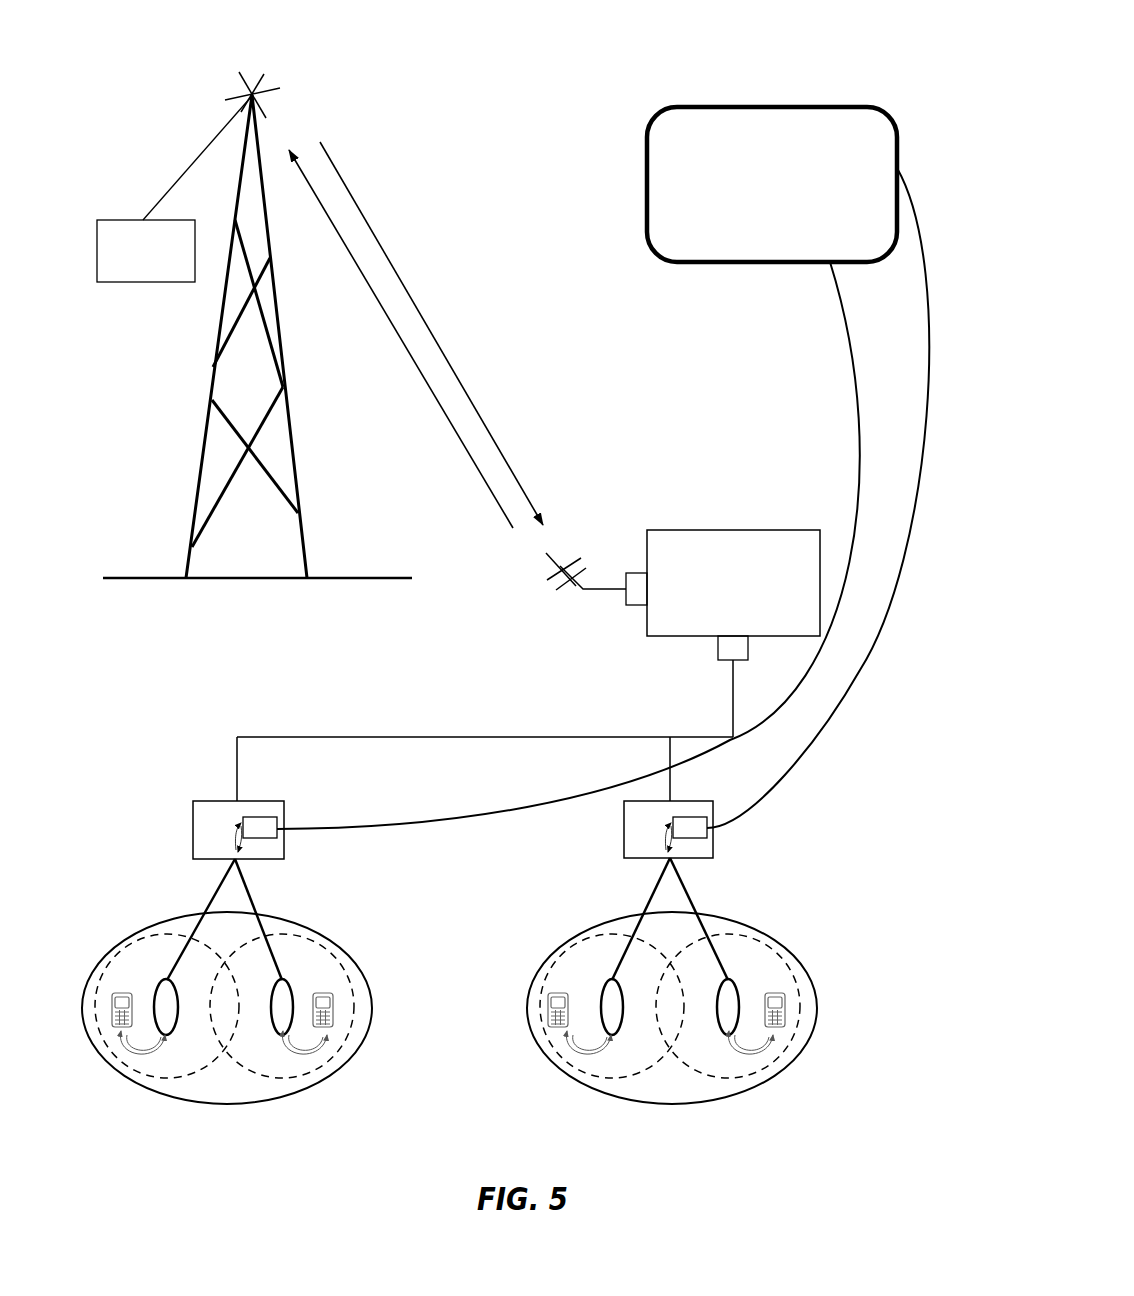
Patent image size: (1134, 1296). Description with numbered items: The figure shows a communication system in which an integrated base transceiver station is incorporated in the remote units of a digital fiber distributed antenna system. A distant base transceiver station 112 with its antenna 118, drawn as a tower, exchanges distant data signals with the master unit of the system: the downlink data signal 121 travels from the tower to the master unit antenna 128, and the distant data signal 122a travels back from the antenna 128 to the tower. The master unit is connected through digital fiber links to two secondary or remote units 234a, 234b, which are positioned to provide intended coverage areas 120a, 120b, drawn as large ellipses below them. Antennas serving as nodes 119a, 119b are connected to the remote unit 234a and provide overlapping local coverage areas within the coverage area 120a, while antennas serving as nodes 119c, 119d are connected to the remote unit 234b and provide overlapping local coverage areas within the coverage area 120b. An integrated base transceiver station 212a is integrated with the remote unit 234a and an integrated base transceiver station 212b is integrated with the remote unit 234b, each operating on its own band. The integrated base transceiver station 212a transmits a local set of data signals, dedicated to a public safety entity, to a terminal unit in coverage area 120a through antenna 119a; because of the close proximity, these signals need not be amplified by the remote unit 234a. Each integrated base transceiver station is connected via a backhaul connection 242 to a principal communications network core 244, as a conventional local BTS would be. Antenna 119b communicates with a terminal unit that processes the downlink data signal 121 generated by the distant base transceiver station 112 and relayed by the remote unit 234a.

The antenna 118 is at (320, 78).
The distant base transceiver station 112 is at (152, 303).
The downlink data signal 121 is at (431, 333).
The distant data signal 122a is at (401, 339).
The antenna 128 is at (580, 552).
The principal communications network core 244 is at (692, 283).
The backhaul connection 242 is at (894, 667).
The remote unit 234a is at (255, 796).
The remote unit 234b is at (676, 879).
The integrated base transceiver station 212a is at (266, 848).
The integrated base transceiver station 212b is at (692, 846).
The antenna 119a is at (154, 977).
The antenna 119b is at (269, 1044).
The antenna 119c is at (624, 1047).
The antenna 119d is at (748, 980).
The coverage area 120a is at (245, 1010).
The coverage area 120b is at (668, 1011).